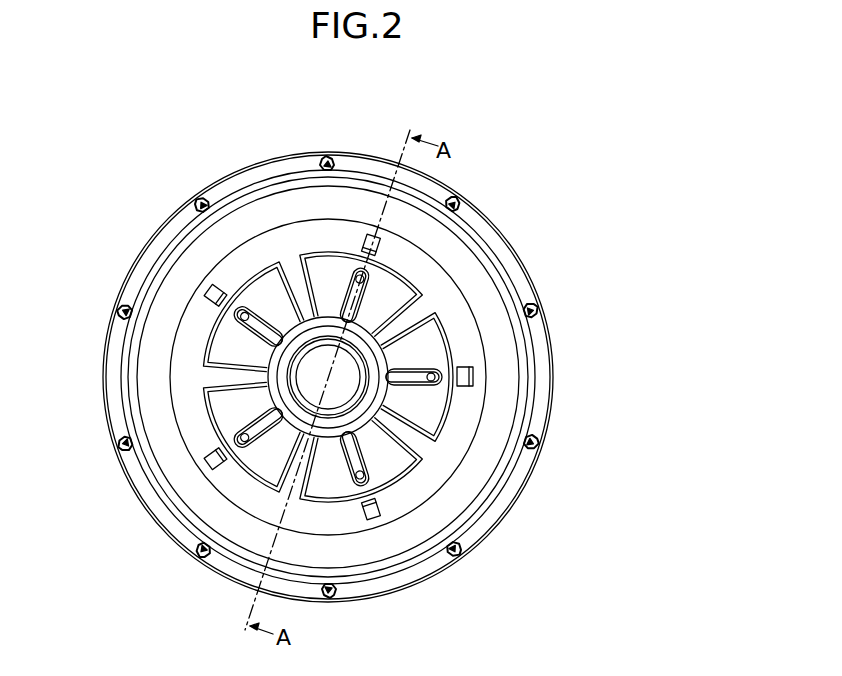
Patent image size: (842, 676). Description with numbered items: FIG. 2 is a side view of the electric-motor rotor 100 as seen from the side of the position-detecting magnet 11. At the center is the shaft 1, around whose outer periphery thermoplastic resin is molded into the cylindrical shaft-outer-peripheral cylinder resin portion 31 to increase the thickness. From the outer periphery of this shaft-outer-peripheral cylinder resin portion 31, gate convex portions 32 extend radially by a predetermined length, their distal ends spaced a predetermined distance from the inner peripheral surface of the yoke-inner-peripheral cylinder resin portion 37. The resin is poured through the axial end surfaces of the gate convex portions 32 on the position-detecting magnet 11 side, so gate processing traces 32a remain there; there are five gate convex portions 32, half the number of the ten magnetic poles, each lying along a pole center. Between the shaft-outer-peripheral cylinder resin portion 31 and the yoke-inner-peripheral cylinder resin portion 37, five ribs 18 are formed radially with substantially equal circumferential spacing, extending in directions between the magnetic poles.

The electric-motor rotor 100 is at (686, 351).
The shaft 1 is at (340, 387).
The position-detecting magnet 11 is at (460, 495).
The ribs 18 is at (300, 292).
The shaft-outer-peripheral cylinder resin portion 31 is at (275, 378).
The gate convex portions 32 is at (410, 380).
The gate processing traces 32a is at (473, 375).
The yoke-inner-peripheral cylinder resin portion 37 is at (468, 347).